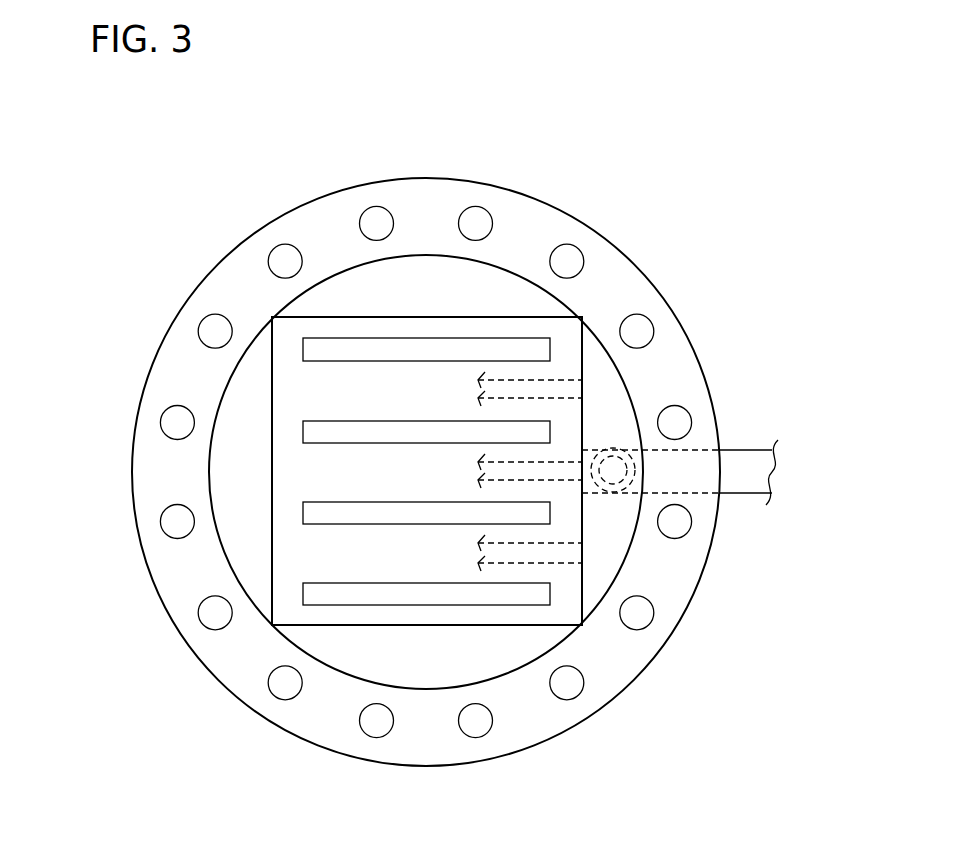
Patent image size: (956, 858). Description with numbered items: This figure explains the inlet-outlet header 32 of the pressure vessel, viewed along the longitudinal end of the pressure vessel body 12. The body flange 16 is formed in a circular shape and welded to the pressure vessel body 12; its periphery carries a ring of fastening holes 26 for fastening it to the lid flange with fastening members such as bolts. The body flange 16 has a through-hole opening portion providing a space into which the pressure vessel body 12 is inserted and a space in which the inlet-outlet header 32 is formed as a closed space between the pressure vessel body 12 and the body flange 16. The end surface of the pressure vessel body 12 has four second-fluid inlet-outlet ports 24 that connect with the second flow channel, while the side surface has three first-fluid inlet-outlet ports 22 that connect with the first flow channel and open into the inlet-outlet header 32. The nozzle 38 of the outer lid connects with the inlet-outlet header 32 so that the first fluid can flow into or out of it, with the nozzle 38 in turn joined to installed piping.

The pressure vessel body 12 is at (435, 317).
The body flange 16 is at (426, 177).
The first-fluid inlet-outlet port 22 is at (583, 388).
The second-fluid inlet-outlet port 24 is at (386, 338).
The fastening hole 26 is at (284, 252).
The inlet-outlet header 32 is at (593, 347).
The nozzle 38 is at (750, 449).